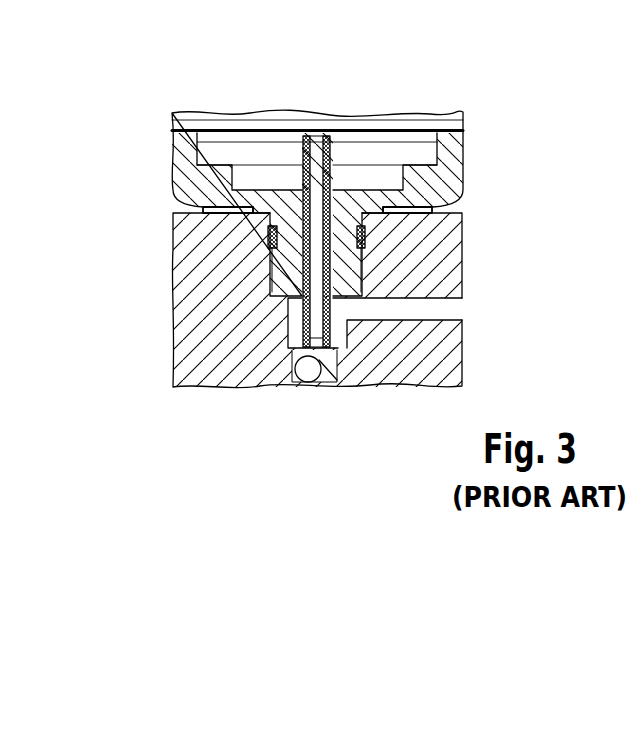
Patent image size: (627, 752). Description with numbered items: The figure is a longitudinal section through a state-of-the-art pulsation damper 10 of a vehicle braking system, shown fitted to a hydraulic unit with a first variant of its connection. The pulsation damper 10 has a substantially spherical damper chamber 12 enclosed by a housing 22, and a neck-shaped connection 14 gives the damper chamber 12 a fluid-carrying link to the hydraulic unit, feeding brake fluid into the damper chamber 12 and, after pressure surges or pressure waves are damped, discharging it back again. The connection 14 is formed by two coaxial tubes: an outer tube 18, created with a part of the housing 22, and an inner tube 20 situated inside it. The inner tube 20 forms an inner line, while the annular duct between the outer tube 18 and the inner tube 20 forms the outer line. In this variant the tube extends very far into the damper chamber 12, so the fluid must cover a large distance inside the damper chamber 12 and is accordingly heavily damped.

The pulsation damper 10 is at (170, 95).
The damper chamber 12 is at (272, 152).
The connection 14 is at (246, 263).
The outer tube 18 is at (274, 288).
The inner tube 20 is at (340, 312).
The housing 22 is at (452, 150).